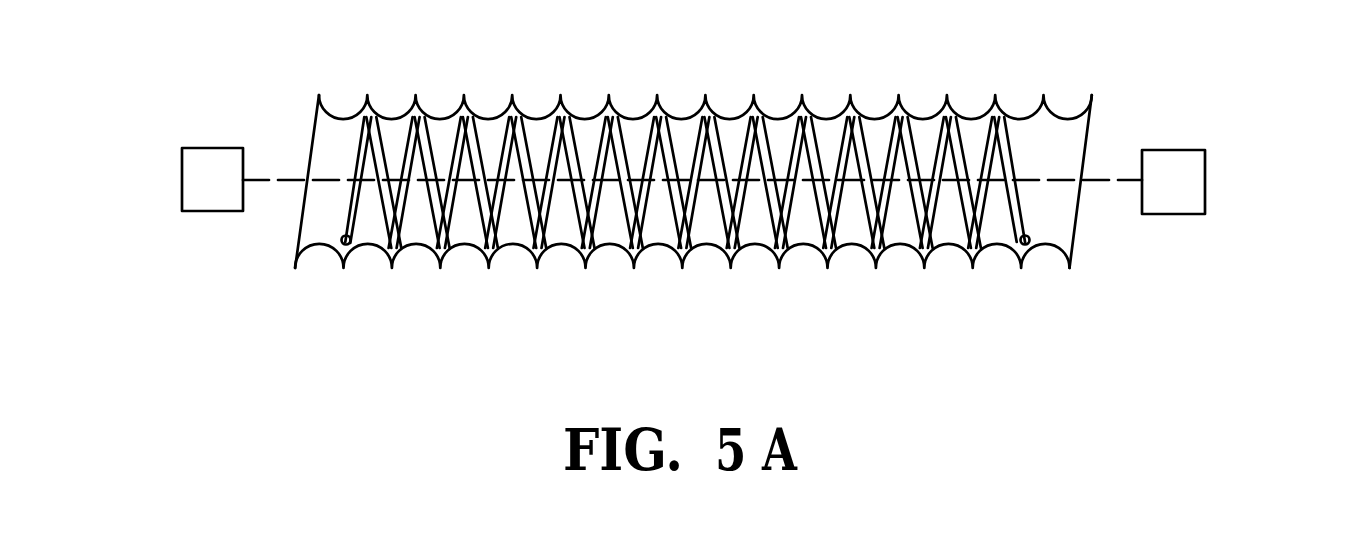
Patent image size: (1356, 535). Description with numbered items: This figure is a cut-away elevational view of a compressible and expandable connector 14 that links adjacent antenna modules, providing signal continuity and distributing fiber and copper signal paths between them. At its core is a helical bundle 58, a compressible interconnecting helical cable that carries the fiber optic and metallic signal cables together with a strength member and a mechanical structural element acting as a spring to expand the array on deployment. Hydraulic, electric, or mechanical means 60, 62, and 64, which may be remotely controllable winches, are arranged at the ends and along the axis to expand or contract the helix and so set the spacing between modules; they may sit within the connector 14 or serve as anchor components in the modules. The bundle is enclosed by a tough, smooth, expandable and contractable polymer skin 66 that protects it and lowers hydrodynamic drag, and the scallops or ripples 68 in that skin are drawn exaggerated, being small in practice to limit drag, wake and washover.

The connector 14 is at (222, 92).
The helical bundle 58 is at (1015, 140).
The hydraulic, electric, or mechanical means 60 is at (182, 177).
The hydraulic, electric, or mechanical means 62 is at (1180, 180).
The hydraulic, electric, or mechanical means 64 is at (272, 183).
The polymer skin 66 is at (434, 120).
The scallops or ripples 68 is at (563, 107).